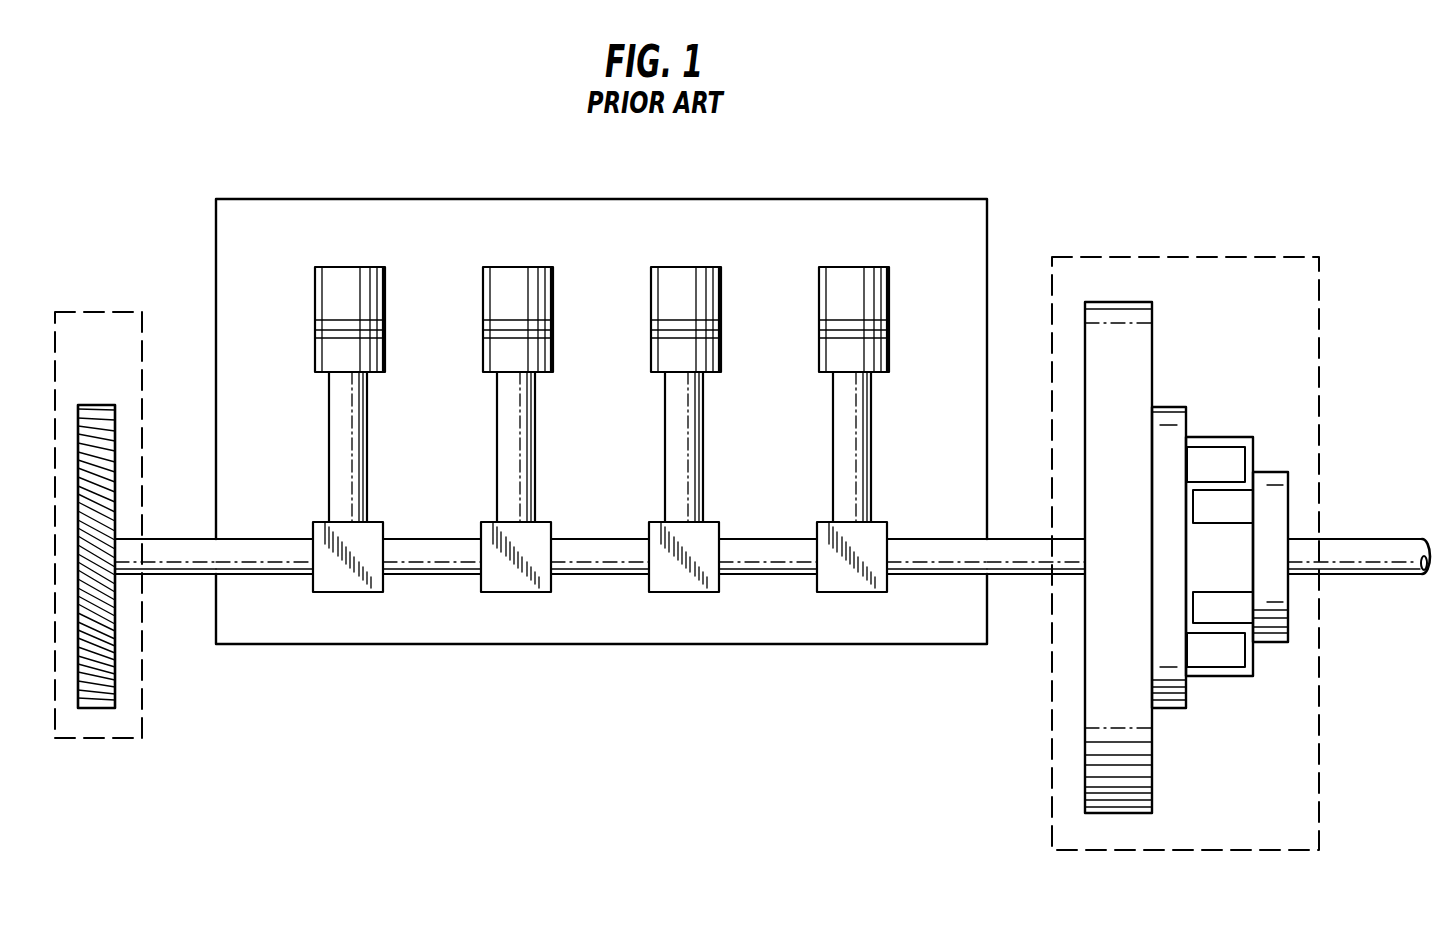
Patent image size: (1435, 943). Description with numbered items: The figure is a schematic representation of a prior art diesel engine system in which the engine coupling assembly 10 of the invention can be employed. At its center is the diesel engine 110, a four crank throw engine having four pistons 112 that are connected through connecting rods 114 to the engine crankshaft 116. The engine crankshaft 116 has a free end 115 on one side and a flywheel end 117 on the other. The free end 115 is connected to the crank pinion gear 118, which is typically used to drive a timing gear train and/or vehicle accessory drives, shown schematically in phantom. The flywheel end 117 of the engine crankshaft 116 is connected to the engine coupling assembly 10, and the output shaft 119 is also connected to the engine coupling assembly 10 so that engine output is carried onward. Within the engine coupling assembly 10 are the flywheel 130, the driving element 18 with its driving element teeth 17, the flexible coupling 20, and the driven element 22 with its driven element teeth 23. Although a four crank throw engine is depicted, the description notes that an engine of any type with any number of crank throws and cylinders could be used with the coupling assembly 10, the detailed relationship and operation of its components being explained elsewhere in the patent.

The engine coupling assembly 10 is at (1207, 255).
The driving element teeth 17 is at (1233, 462).
The driving element 18 is at (1163, 407).
The flexible coupling 20 is at (1205, 437).
The driven element 22 is at (1270, 637).
The driven element teeth 23 is at (1205, 605).
The diesel engine 110 is at (667, 198).
The pistons 112 is at (342, 267).
The connecting rods 114 is at (368, 453).
The free end 115 is at (175, 573).
The engine crankshaft 116 is at (595, 575).
The flywheel end 117 is at (1005, 538).
The crank pinion gear 118 is at (97, 405).
The output shaft 119 is at (1362, 540).
The flywheel 130 is at (1112, 302).